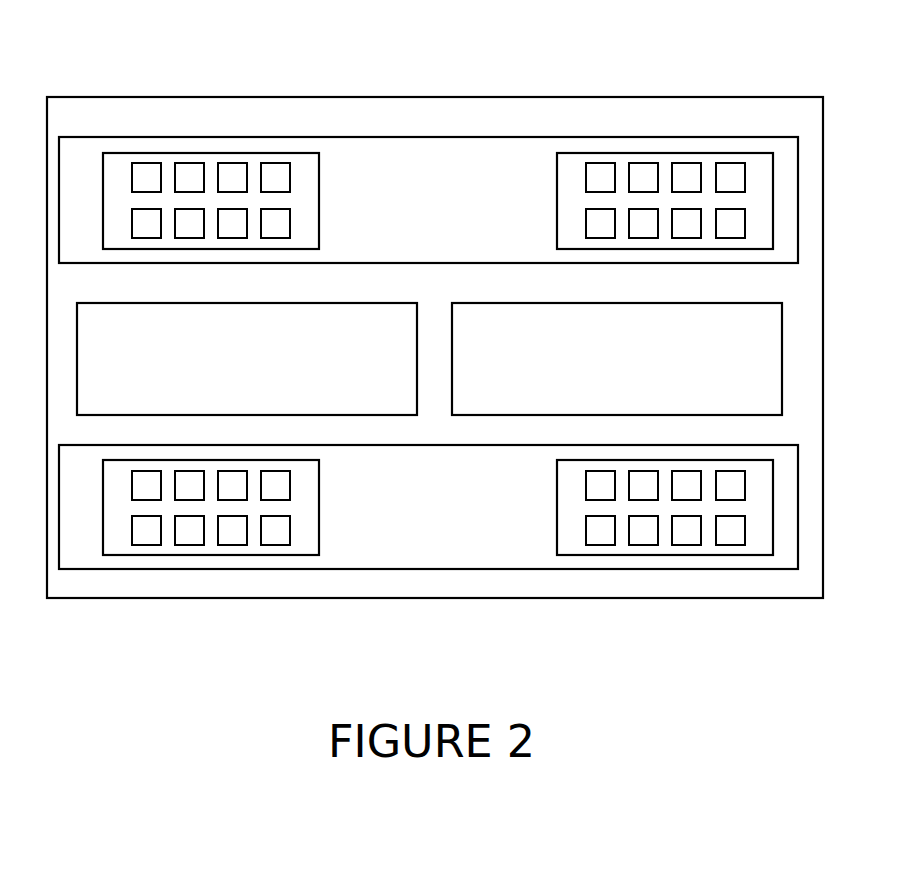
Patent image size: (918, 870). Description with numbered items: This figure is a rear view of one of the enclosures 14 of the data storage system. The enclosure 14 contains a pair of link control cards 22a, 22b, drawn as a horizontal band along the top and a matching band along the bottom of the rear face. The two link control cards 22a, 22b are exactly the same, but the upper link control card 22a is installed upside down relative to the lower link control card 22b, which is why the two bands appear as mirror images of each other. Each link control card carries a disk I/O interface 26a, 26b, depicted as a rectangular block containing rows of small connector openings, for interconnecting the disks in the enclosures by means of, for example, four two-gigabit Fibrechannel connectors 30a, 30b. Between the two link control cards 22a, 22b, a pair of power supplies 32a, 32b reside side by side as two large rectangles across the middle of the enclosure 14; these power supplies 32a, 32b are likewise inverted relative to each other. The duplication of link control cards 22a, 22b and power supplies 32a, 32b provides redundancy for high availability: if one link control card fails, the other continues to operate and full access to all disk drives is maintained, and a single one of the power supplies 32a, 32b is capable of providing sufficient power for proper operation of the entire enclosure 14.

The enclosure 14 is at (525, 97).
The link control card 22a is at (360, 137).
The link control card 22b is at (442, 569).
The disk I/O interface 26a is at (210, 153).
The disk I/O interface 26b is at (663, 153).
The Fibrechannel connector 30a is at (275, 163).
The Fibrechannel connector 30b is at (728, 163).
The power supply 32a is at (218, 303).
The power supply 32b is at (567, 303).